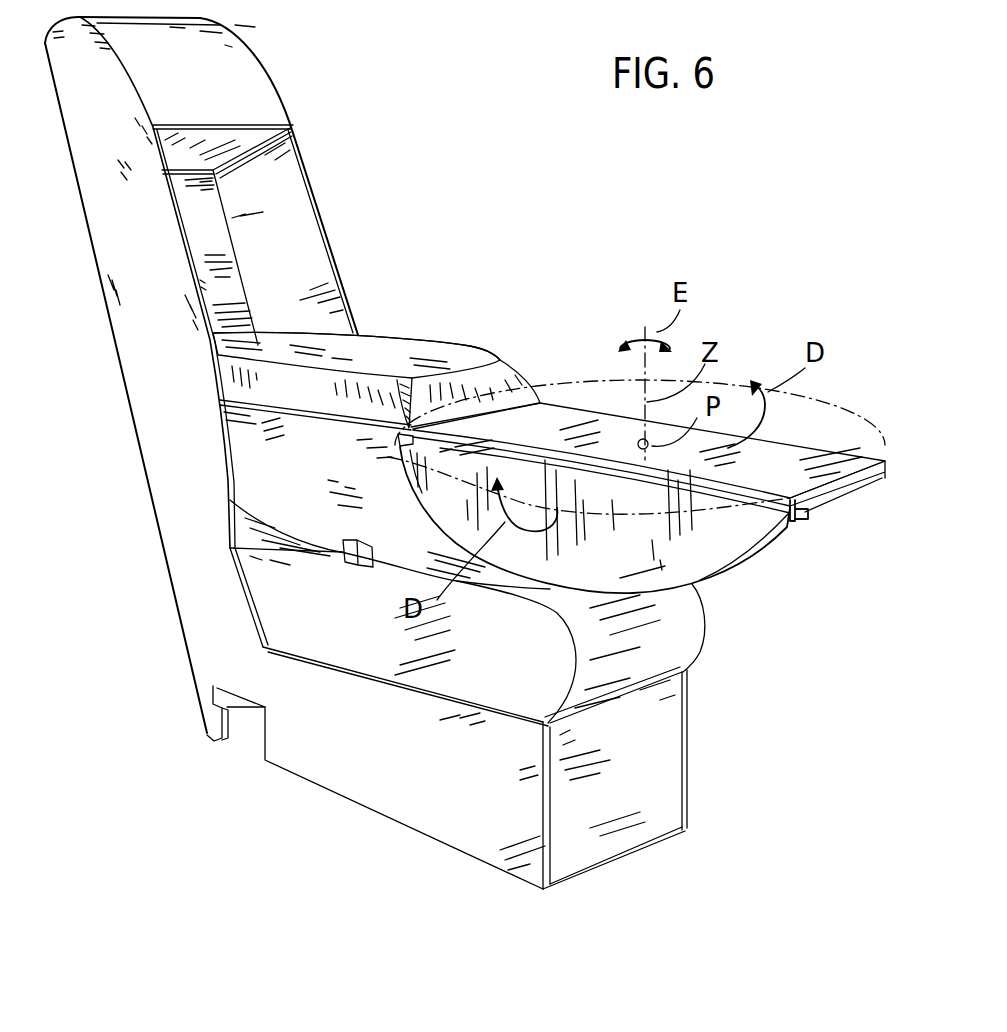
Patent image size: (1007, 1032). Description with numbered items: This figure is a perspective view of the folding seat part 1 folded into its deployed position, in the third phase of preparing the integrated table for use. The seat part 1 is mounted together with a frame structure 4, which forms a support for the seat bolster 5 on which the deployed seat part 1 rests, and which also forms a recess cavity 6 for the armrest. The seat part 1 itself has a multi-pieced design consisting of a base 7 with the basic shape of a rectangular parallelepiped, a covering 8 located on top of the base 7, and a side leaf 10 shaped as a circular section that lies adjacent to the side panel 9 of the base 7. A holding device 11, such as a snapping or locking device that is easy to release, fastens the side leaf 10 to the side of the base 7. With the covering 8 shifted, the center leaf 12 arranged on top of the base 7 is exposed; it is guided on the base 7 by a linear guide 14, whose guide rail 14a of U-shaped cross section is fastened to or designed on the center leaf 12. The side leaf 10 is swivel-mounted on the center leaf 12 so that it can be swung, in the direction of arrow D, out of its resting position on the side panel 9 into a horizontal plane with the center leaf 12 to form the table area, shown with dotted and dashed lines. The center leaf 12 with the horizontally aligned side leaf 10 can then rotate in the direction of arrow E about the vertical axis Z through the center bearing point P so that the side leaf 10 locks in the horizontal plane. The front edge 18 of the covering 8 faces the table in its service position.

The folding seat part 1 is at (471, 348).
The frame structure 4 is at (312, 173).
The seat bolster 5 is at (312, 598).
The recess cavity 6 is at (226, 238).
The base 7 is at (250, 442).
The covering 8 is at (377, 353).
The side panel 9 is at (250, 492).
The side leaf 10 is at (700, 545).
The holding device 11 is at (358, 567).
The center leaf 12 is at (820, 465).
The linear guide 14 is at (796, 540).
The guide rail 14a is at (799, 510).
The front edge 18 is at (500, 362).